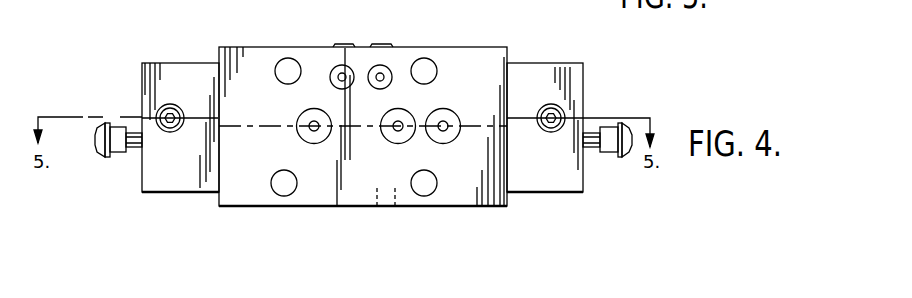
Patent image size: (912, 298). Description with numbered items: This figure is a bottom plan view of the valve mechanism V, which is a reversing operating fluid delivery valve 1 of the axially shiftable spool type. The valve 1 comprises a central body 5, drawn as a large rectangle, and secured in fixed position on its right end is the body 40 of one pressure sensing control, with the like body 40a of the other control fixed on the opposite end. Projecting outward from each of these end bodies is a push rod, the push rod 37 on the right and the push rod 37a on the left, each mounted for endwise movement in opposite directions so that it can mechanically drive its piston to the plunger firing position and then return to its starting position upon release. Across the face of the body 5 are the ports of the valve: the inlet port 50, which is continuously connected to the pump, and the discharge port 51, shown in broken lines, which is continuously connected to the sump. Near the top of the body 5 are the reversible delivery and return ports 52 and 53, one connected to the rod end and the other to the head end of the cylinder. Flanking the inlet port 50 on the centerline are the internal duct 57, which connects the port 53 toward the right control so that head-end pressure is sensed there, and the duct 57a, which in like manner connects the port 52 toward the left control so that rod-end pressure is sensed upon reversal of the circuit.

The fluid delivery valve 1 is at (460, 188).
The body 5 is at (291, 206).
The push rod 37 is at (591, 149).
The push rod 37a is at (133, 149).
The body 40 is at (533, 192).
The body 40a is at (203, 192).
The inlet port 50 is at (398, 131).
The discharge port 51 is at (387, 207).
The reversible delivery and return port 52 is at (386, 67).
The reversible delivery and return port 53 is at (341, 65).
The internal duct 57 is at (445, 123).
The duct 57a is at (311, 123).
The valve mechanism V is at (492, 19).